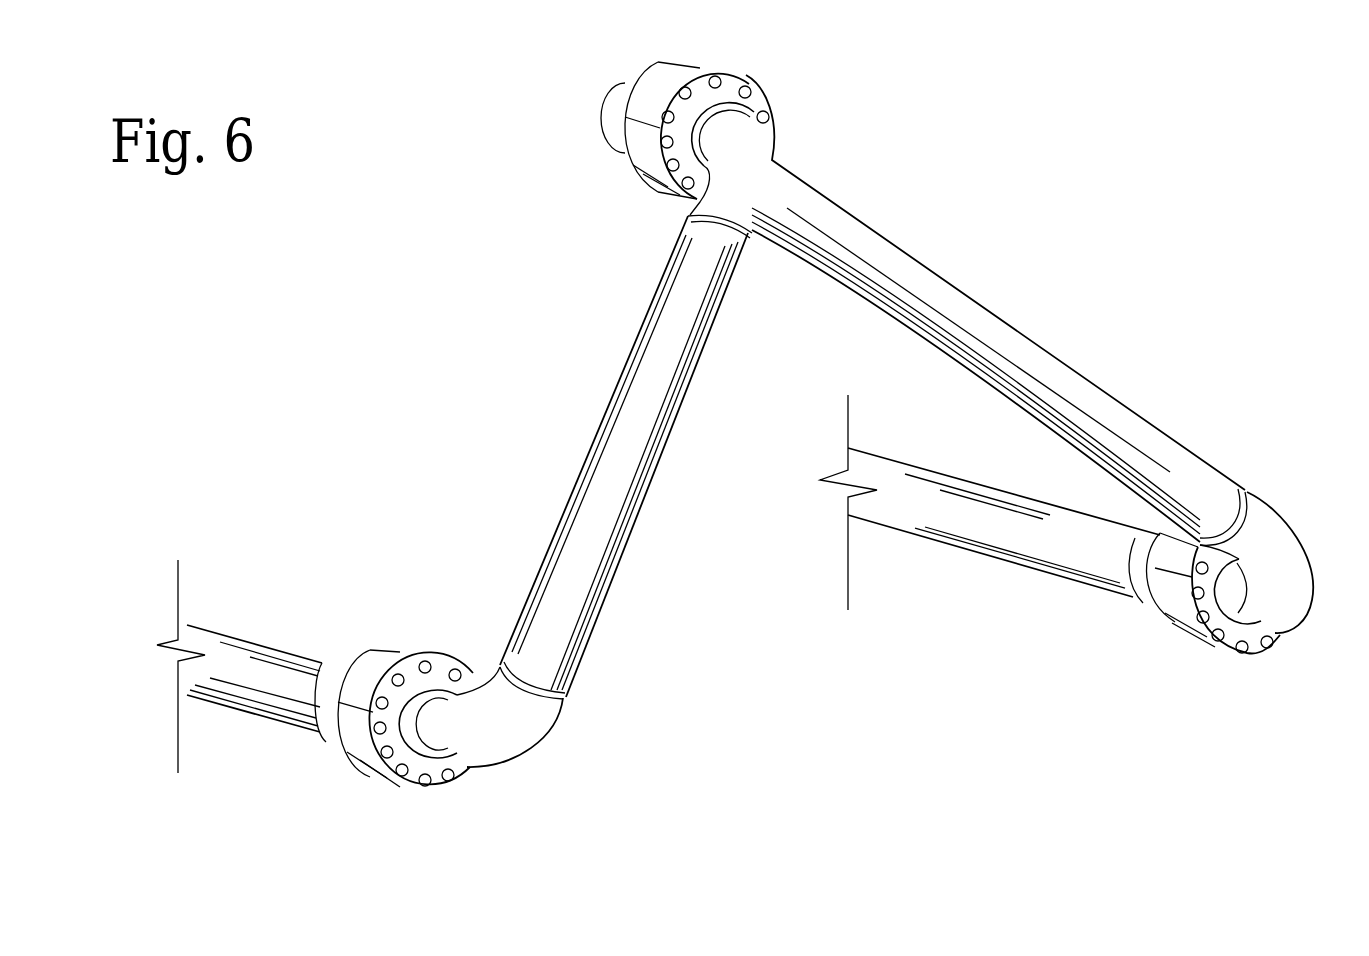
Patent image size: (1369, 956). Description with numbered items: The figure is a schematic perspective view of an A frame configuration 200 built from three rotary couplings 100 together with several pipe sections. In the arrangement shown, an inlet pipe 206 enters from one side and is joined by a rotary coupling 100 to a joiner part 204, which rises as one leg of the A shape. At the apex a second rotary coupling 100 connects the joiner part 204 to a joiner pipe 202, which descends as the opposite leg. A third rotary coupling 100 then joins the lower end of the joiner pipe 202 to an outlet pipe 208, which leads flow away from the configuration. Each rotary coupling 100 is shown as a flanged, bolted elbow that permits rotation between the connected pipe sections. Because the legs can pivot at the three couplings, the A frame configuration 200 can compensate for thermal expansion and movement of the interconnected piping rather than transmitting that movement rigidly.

The rotary coupling 100 is at (662, 63).
The A frame configuration 200 is at (1270, 150).
The joiner pipe 202 is at (1010, 352).
The joiner part 204 is at (635, 382).
The inlet pipe 206 is at (218, 633).
The outlet pipe 208 is at (897, 512).